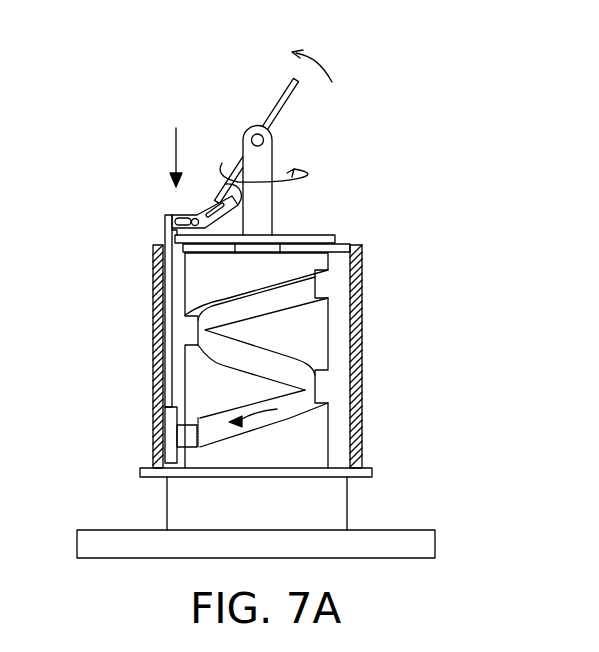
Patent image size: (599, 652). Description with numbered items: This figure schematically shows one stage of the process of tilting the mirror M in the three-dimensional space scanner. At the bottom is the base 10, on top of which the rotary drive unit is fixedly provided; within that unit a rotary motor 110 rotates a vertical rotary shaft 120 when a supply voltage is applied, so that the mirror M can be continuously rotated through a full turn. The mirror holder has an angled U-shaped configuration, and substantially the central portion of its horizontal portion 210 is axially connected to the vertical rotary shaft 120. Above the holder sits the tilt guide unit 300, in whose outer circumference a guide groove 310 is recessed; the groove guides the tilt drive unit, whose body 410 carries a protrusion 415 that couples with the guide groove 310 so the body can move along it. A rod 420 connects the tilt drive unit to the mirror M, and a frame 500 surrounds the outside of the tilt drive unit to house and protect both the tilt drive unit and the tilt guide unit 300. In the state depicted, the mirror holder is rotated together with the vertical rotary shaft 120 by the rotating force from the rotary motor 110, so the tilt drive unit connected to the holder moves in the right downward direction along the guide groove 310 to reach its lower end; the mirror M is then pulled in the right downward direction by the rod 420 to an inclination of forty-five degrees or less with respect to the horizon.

The mirror M is at (278, 100).
The base 10 is at (436, 544).
The rotary motor 110 is at (340, 505).
The vertical rotary shaft 120 is at (322, 250).
The horizontal portion 210 is at (335, 242).
The tilt guide unit 300 is at (320, 338).
The guide groove 310 is at (318, 385).
The body 410 is at (168, 425).
The protrusion 415 is at (185, 437).
The rod 420 is at (166, 330).
The frame 500 is at (363, 291).